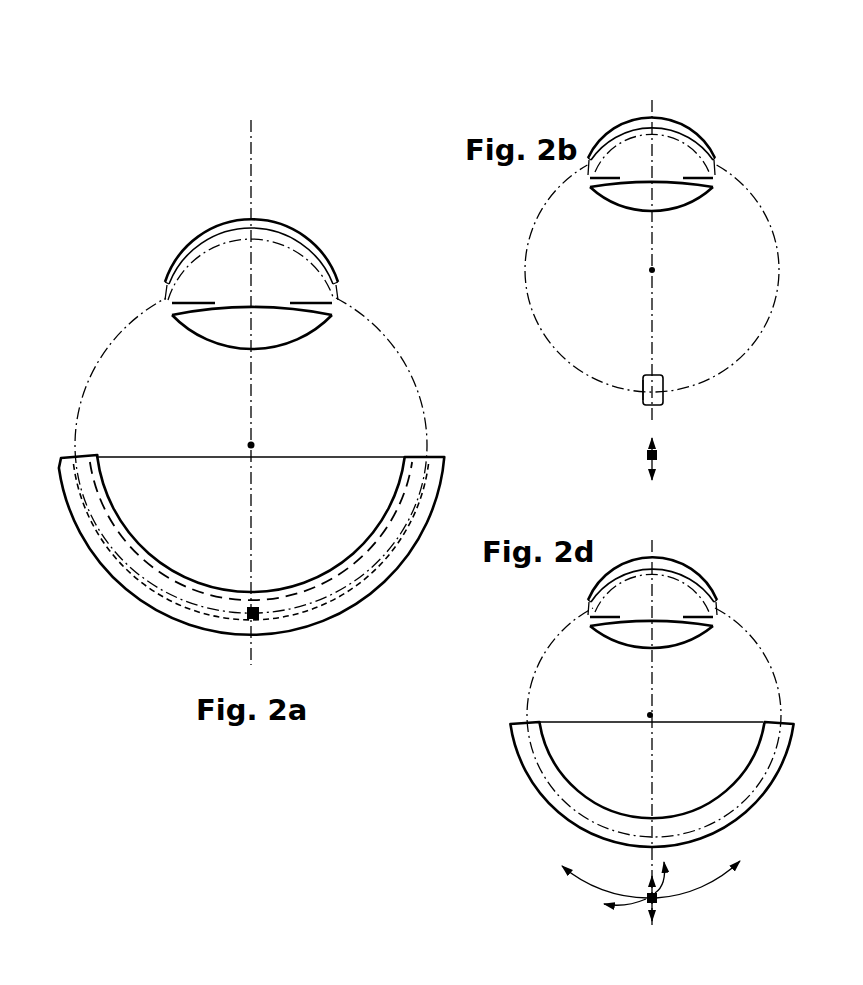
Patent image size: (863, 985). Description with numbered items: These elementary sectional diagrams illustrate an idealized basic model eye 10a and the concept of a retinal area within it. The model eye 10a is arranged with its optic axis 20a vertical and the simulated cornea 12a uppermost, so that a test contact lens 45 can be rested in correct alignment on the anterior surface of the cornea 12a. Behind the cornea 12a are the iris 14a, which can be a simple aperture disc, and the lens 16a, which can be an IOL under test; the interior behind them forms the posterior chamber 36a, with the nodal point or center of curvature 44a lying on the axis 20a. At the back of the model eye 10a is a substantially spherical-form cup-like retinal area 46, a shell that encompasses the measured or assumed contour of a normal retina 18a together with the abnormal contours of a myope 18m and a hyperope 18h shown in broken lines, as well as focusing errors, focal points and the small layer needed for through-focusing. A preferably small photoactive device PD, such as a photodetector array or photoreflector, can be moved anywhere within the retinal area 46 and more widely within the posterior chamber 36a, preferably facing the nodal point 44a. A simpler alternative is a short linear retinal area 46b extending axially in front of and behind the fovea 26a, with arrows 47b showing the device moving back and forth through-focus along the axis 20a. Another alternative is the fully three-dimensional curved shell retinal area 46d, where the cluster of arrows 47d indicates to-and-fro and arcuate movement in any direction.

In FIG. 2a, the model eye 10a is at (394, 320).
In FIG. 2b, the model eye 10a is at (760, 186).
In FIG. 2d, the model eye 10a is at (760, 624).
In FIG. 2a, the simulated cornea 12a is at (306, 264).
In FIG. 2b, the simulated cornea 12a is at (689, 148).
In FIG. 2d, the simulated cornea 12a is at (691, 586).
In FIG. 2a, the iris 14a is at (325, 316).
In FIG. 2b, the iris 14a is at (704, 188).
In FIG. 2d, the iris 14a is at (706, 626).
In FIG. 2a, the lens 16a is at (196, 329).
In FIG. 2b, the lens 16a is at (612, 203).
In FIG. 2d, the lens 16a is at (614, 641).
In FIG. 2a, the retina 18a is at (424, 397).
In FIG. 2b, the retina 18a is at (559, 343).
In FIG. 2d, the retina 18a is at (782, 686).
In FIG. 2a, the retina of a hyperope 18h is at (103, 512).
In FIG. 2a, the retina of a myope 18m is at (71, 489).
In FIG. 2a, the optic axis 20a is at (251, 178).
In FIG. 2b, the optic axis 20a is at (652, 332).
In FIG. 2d, the optic axis 20a is at (652, 780).
In FIG. 2b, the fovea 26a is at (643, 392).
In FIG. 2a, the posterior chamber 36a is at (332, 424).
In FIG. 2b, the posterior chamber 36a is at (722, 264).
In FIG. 2d, the posterior chamber 36a is at (727, 701).
In FIG. 2a, the nodal point 44a is at (246, 443).
In FIG. 2b, the nodal point 44a is at (647, 270).
In FIG. 2d, the nodal point 44a is at (647, 714).
In FIG. 2a, the test contact lens 45 is at (301, 229).
In FIG. 2b, the test contact lens 45 is at (704, 129).
In FIG. 2d, the test contact lens 45 is at (706, 566).
In FIG. 2a, the retinal area 46 is at (452, 481).
In FIG. 2b, the linear retinal area 46b is at (665, 369).
In FIG. 2d, the retinal area 46d is at (797, 722).
In FIG. 2b, the arrows 47b is at (679, 455).
In FIG. 2d, the cluster of arrows 47d is at (719, 894).
In FIG. 2a, the photoactive device PD is at (266, 623).